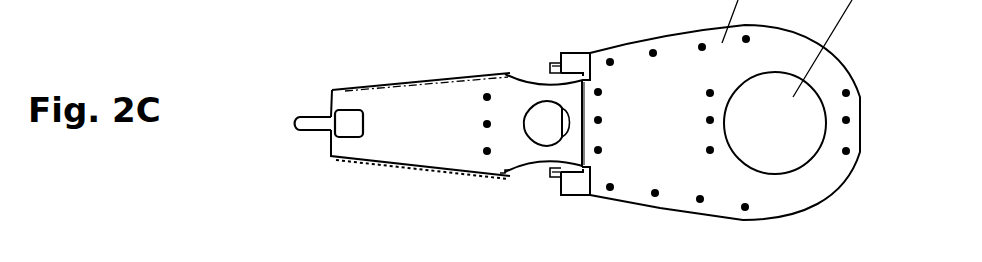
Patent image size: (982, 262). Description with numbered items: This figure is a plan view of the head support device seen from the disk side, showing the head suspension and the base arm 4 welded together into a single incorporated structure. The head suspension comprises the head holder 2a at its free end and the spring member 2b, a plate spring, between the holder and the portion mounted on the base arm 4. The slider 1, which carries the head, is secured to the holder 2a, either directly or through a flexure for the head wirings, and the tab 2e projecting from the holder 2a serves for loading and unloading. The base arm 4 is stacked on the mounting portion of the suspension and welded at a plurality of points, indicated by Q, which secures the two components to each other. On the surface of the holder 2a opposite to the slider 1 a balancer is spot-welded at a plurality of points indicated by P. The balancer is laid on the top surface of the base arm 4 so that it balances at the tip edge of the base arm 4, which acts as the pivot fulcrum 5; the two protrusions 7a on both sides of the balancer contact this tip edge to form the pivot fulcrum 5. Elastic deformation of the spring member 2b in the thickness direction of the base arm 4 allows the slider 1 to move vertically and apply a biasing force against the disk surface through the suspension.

The slider 1 is at (348, 118).
The head holder 2a is at (393, 134).
The spring member 2b is at (520, 101).
The tab for loading/unloading 2e is at (310, 124).
The base arm 4 is at (577, 186).
The pivot fulcrum 5 is at (556, 68).
The protrusions 7a is at (553, 174).
The spot welding points P is at (480, 163).
The welding points Q is at (644, 206).